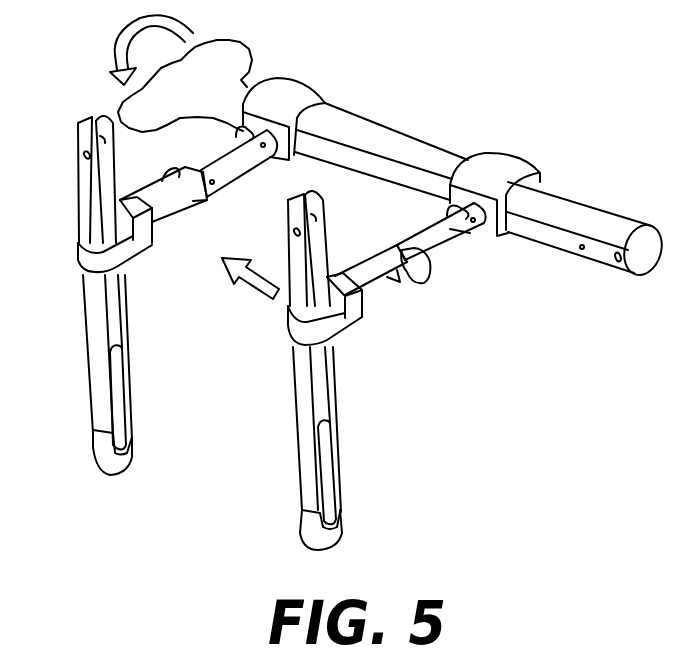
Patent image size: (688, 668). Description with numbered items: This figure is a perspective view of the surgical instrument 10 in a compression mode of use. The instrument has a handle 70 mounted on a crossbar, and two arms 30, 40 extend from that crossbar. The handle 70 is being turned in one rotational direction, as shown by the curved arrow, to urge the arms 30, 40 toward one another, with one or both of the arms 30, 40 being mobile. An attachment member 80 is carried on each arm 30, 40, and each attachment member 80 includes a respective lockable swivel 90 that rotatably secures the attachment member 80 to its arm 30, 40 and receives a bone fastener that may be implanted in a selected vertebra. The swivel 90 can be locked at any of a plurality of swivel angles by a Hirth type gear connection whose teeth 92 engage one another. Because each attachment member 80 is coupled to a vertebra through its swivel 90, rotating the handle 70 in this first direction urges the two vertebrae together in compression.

The surgical instrument 10 is at (474, 42).
The arm 30 is at (70, 418).
The arm 40 is at (255, 513).
The handle 70 is at (240, 42).
The attachment member 80 is at (352, 355).
The lockable swivel 90 is at (355, 326).
The teeth 92 is at (338, 478).